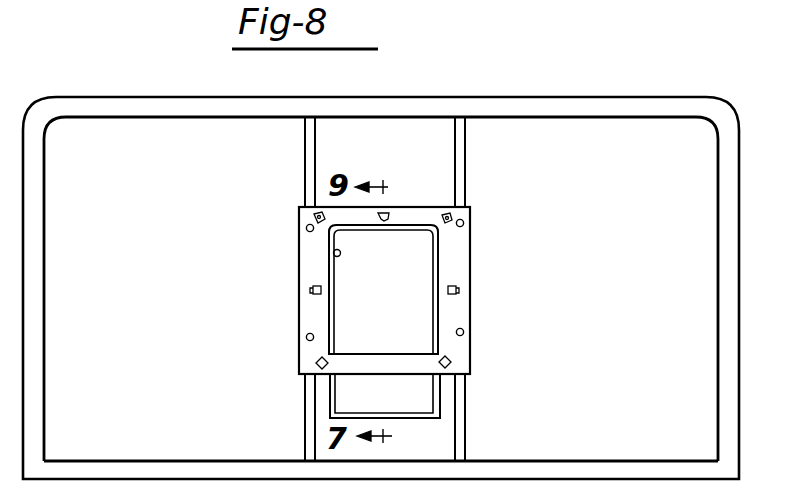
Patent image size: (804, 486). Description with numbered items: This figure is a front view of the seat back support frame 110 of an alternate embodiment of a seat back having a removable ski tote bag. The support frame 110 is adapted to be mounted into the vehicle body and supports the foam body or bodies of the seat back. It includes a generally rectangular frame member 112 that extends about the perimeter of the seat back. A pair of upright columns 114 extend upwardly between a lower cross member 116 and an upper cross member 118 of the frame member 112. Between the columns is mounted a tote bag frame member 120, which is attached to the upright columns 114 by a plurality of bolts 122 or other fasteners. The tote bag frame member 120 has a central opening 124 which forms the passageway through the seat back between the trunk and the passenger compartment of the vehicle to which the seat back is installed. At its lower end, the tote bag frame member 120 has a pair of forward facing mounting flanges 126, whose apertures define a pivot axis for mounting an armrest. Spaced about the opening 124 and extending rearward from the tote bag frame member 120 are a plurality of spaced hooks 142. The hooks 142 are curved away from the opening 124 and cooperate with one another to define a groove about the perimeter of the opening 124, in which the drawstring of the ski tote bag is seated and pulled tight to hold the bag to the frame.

The seat back support frame 110 is at (163, 84).
The frame member 112 is at (18, 242).
The upright columns 114 is at (304, 137).
The lower cross member 116 is at (598, 460).
The upper cross member 118 is at (653, 118).
The tote bag frame member 120 is at (470, 249).
The bolts 122 is at (307, 223).
The central opening 124 is at (333, 251).
The forward facing mounting flanges 126 is at (329, 397).
The hooks 142 is at (314, 288).